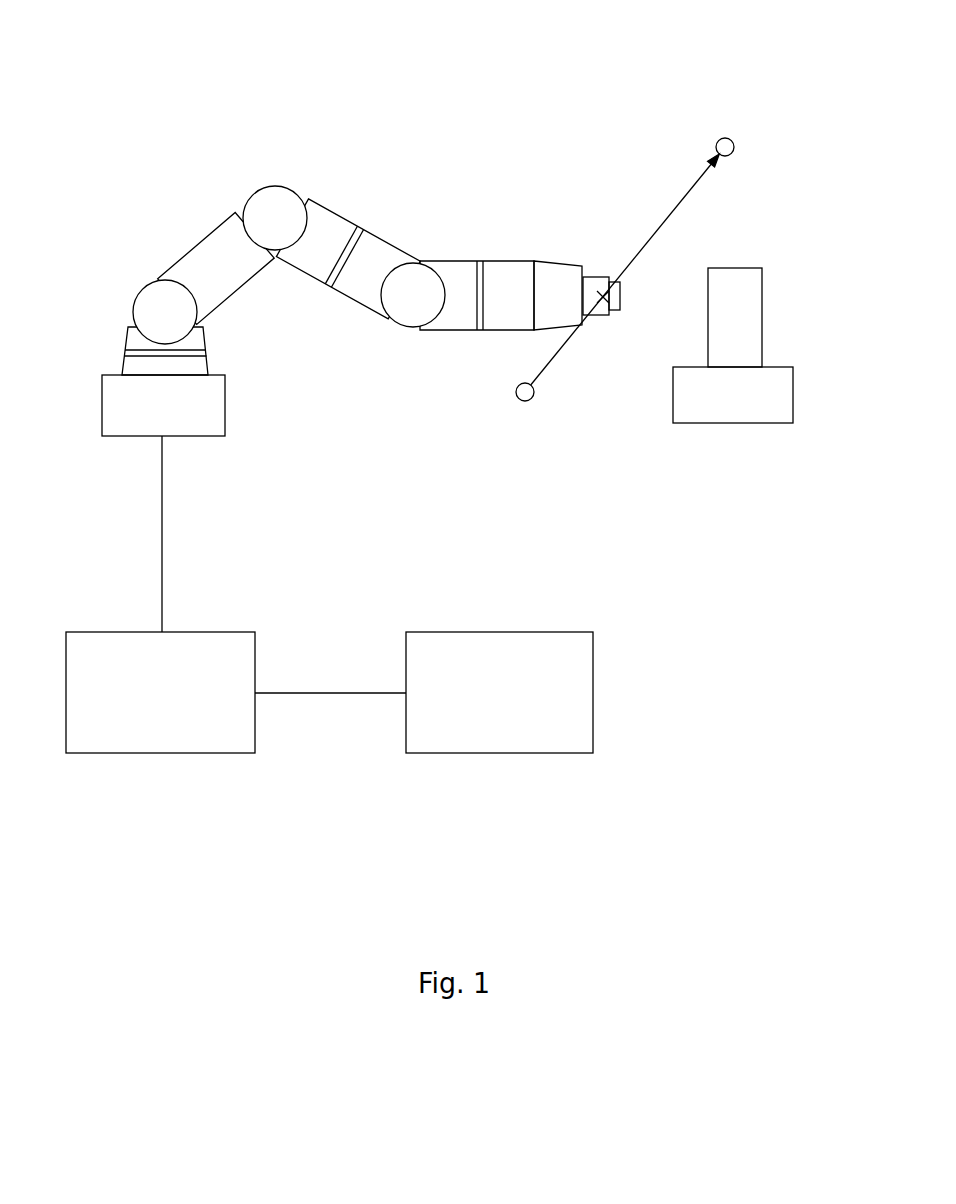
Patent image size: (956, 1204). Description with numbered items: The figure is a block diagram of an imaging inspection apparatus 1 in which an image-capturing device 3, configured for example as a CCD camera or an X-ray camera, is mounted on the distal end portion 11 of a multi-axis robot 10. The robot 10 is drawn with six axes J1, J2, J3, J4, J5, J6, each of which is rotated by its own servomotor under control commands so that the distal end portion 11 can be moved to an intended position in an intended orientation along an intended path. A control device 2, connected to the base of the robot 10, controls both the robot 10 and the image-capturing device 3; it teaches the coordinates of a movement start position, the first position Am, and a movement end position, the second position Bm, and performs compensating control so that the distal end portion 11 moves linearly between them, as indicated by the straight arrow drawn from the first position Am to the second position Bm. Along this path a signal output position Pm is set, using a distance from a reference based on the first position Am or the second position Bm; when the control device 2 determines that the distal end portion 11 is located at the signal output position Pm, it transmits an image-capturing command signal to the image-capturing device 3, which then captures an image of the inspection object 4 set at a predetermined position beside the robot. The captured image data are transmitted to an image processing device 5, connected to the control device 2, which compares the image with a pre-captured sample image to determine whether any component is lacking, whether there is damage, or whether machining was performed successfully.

The imaging inspection apparatus 1 is at (535, 68).
The robot 10 is at (314, 274).
The axis J1 is at (207, 358).
The axis J2 is at (150, 310).
The axis J3 is at (272, 203).
The axis J4 is at (365, 232).
The axis J5 is at (408, 318).
The axis J6 is at (482, 260).
The distal end portion 11 is at (545, 268).
The image-capturing device 3 is at (600, 287).
The signal output position Pm is at (607, 297).
The first position Am is at (533, 397).
The second position Bm is at (735, 145).
The inspection object 4 is at (752, 312).
The control device 2 is at (220, 632).
The image processing device 5 is at (563, 632).